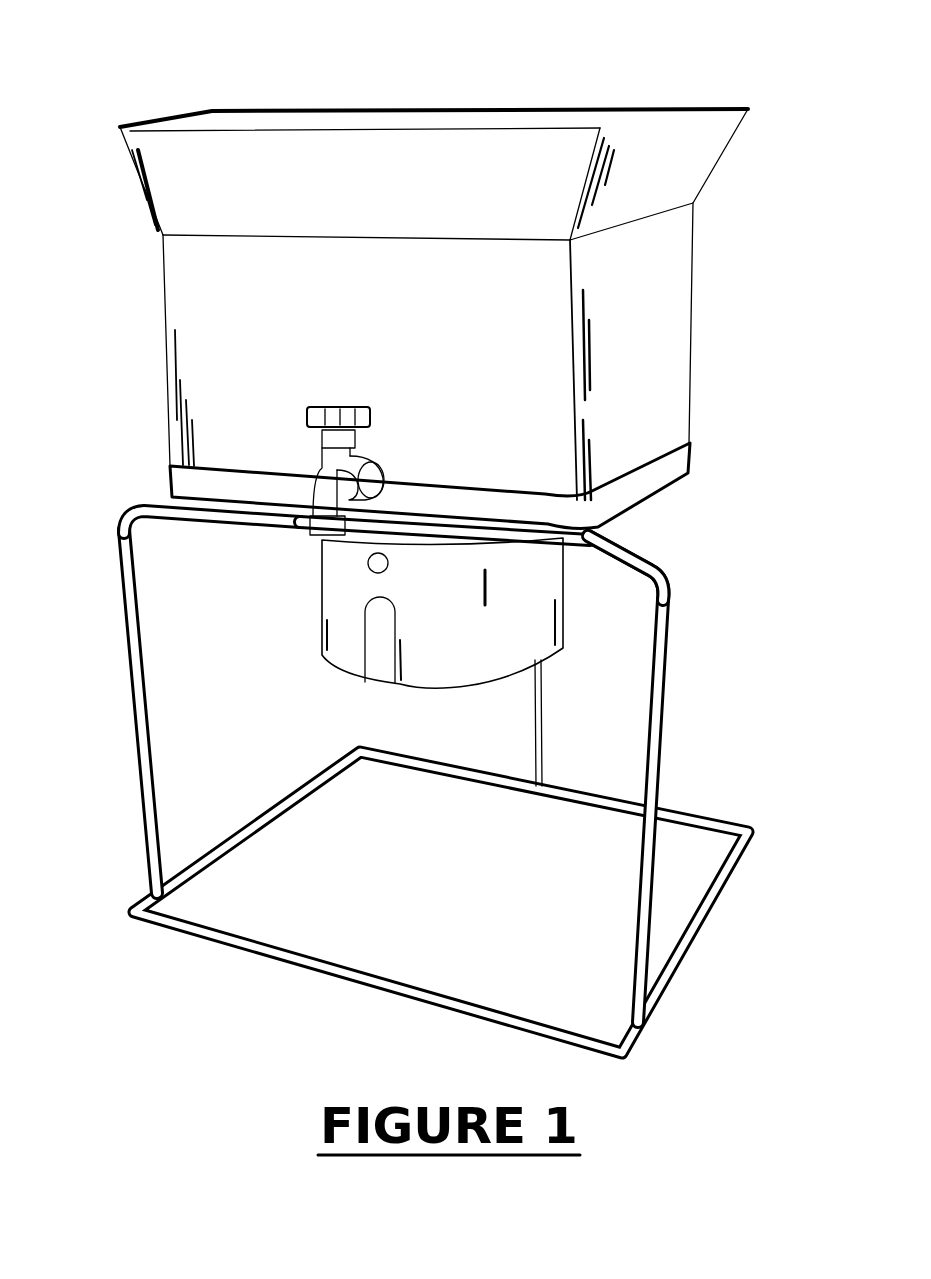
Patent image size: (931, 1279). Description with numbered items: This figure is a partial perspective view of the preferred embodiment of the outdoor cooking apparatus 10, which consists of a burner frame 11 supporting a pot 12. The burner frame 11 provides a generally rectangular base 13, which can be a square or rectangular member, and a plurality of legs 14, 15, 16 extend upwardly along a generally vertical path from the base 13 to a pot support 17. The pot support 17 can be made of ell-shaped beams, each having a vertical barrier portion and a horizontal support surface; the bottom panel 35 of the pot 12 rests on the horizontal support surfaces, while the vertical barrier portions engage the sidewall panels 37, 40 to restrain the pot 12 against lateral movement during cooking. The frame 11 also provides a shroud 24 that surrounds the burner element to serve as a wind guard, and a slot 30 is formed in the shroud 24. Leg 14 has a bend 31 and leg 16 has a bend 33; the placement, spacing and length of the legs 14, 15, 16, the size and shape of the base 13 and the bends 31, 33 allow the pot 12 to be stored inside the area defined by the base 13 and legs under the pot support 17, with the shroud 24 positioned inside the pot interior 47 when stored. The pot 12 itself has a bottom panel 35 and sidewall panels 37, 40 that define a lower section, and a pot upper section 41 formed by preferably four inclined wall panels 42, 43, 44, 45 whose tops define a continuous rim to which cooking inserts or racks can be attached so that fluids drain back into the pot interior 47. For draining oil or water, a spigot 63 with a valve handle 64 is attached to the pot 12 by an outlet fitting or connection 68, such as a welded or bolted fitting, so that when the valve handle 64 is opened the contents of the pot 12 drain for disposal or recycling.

The outdoor cooking apparatus 10 is at (766, 74).
The burner frame 11 is at (405, 760).
The pot 12 is at (446, 351).
The base 13 is at (335, 980).
The leg 14 is at (146, 657).
The leg 15 is at (532, 716).
The leg 16 is at (668, 721).
The pot support 17 is at (695, 460).
The shroud 24 is at (428, 631).
The slot 30 is at (381, 662).
The bend 31 is at (128, 516).
The bend 33 is at (660, 576).
The bottom panel 35 is at (264, 530).
The sidewall panel 37 is at (220, 338).
The sidewall panel 40 is at (675, 350).
The pot upper section 41 is at (135, 165).
The inclined wall panel 42 is at (437, 134).
The inclined wall panel 43 is at (290, 108).
The inclined wall panel 44 is at (542, 118).
The inclined wall panel 45 is at (688, 156).
The pot interior 47 is at (462, 110).
The spigot 63 is at (386, 462).
The valve handle 64 is at (385, 442).
The outlet fitting or connection 68 is at (380, 456).